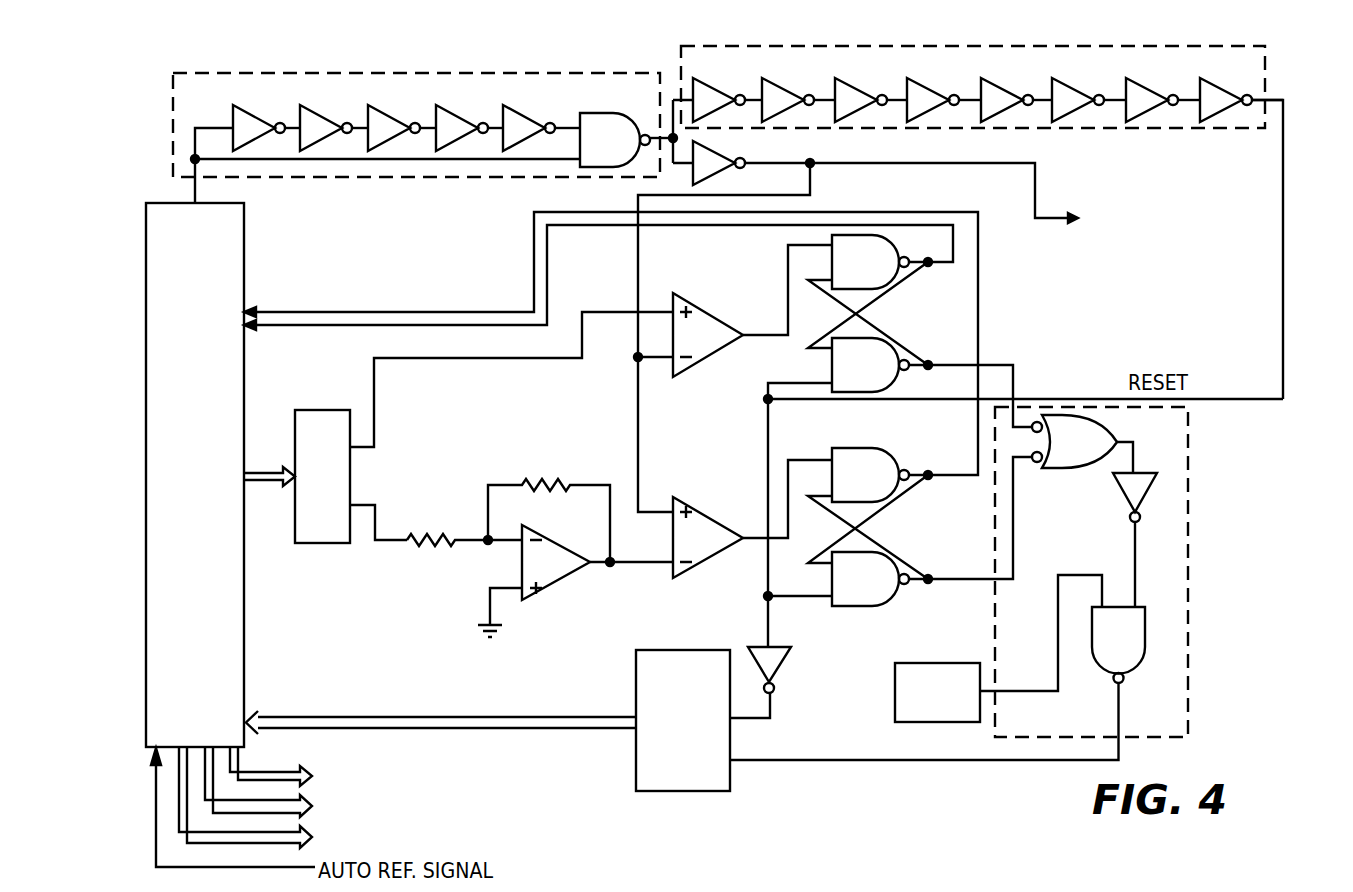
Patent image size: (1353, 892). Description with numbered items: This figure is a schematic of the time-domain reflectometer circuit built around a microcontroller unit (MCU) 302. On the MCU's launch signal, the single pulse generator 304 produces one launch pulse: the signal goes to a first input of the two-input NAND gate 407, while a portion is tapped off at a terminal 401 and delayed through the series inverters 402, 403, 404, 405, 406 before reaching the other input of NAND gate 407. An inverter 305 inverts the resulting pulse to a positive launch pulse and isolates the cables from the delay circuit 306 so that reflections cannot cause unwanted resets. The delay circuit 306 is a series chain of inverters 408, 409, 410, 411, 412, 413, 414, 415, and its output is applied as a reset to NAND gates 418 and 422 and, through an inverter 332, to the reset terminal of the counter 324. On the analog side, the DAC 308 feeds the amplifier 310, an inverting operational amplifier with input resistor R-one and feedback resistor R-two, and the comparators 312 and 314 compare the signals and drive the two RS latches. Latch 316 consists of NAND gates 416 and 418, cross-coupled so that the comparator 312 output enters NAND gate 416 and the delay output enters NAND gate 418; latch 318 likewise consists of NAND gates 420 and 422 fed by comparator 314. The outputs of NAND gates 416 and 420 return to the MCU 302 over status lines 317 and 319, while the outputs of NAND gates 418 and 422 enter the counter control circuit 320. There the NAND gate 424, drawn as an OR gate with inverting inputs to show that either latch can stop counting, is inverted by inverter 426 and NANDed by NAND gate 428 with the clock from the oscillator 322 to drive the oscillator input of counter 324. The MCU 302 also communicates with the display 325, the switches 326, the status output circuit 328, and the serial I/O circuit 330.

The microcontroller unit (MCU) 302 is at (244, 258).
The electrical pulse generator 304 is at (173, 82).
The inverter 305 is at (748, 152).
The delay circuit 306 is at (1268, 72).
The digital-to-analog converter (DAC) 308 is at (325, 412).
The amplifier 310 is at (520, 446).
The comparator 312 is at (712, 305).
The comparator 314 is at (712, 510).
The latch 316 is at (638, 410).
The status line 317 is at (402, 325).
The latch 318 is at (638, 409).
The status line 319 is at (350, 312).
The counter control circuit 320 is at (1188, 462).
The oscillator 322 is at (936, 663).
The counter 324 is at (694, 650).
The display 325 is at (350, 767).
The switches 326 is at (1150, 223).
The status output circuit 328 is at (413, 783).
The serial I/O circuit 330 is at (379, 799).
The inverter 332 is at (782, 662).
The terminal 401 is at (195, 159).
The inverter 402 is at (276, 100).
The inverter 403 is at (315, 115).
The inverter 404 is at (398, 118).
The inverter 405 is at (462, 118).
The inverter 406 is at (525, 115).
The two-input NAND gate 407 is at (595, 113).
The inverter 408 is at (712, 96).
The inverter 409 is at (782, 96).
The inverter 410 is at (852, 96).
The inverter 411 is at (930, 95).
The inverter 412 is at (996, 96).
The inverter 413 is at (1072, 96).
The inverter 414 is at (1146, 96).
The inverter 415 is at (1226, 96).
The two-input NAND gate 416 is at (598, 286).
The two-input NAND gate 418 is at (898, 463).
The two-input NAND gate 420 is at (611, 387).
The two-input NAND gate 422 is at (908, 458).
The NAND gate 424 is at (1078, 468).
The inverter 426 is at (1120, 495).
The NAND gate 428 is at (1145, 634).